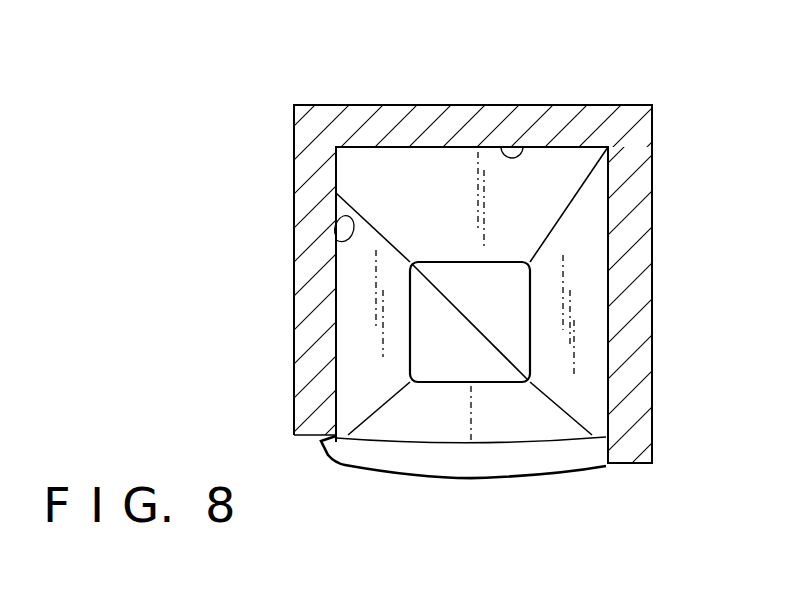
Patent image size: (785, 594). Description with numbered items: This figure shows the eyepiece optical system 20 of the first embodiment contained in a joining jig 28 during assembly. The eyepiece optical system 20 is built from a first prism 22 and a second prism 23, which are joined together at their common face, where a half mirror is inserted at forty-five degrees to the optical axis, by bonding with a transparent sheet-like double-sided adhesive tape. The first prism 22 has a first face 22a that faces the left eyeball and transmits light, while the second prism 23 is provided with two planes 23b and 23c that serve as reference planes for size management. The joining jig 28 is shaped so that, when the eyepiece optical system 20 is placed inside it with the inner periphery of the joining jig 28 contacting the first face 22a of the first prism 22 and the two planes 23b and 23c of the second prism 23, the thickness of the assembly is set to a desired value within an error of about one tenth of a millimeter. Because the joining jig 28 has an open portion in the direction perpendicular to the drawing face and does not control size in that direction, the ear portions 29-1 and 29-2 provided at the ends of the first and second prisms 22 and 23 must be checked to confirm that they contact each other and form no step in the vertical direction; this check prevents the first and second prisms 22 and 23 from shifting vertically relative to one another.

The eyepiece optical system 20 is at (503, 484).
The first prism 22 is at (353, 273).
The first face 22a is at (336, 240).
The second prism 23 is at (580, 285).
The plane 23b is at (513, 158).
The plane 23c is at (608, 366).
The joining jig 28 is at (652, 209).
The ear portion 29-1 is at (418, 335).
The ear portion 29-2 is at (508, 322).